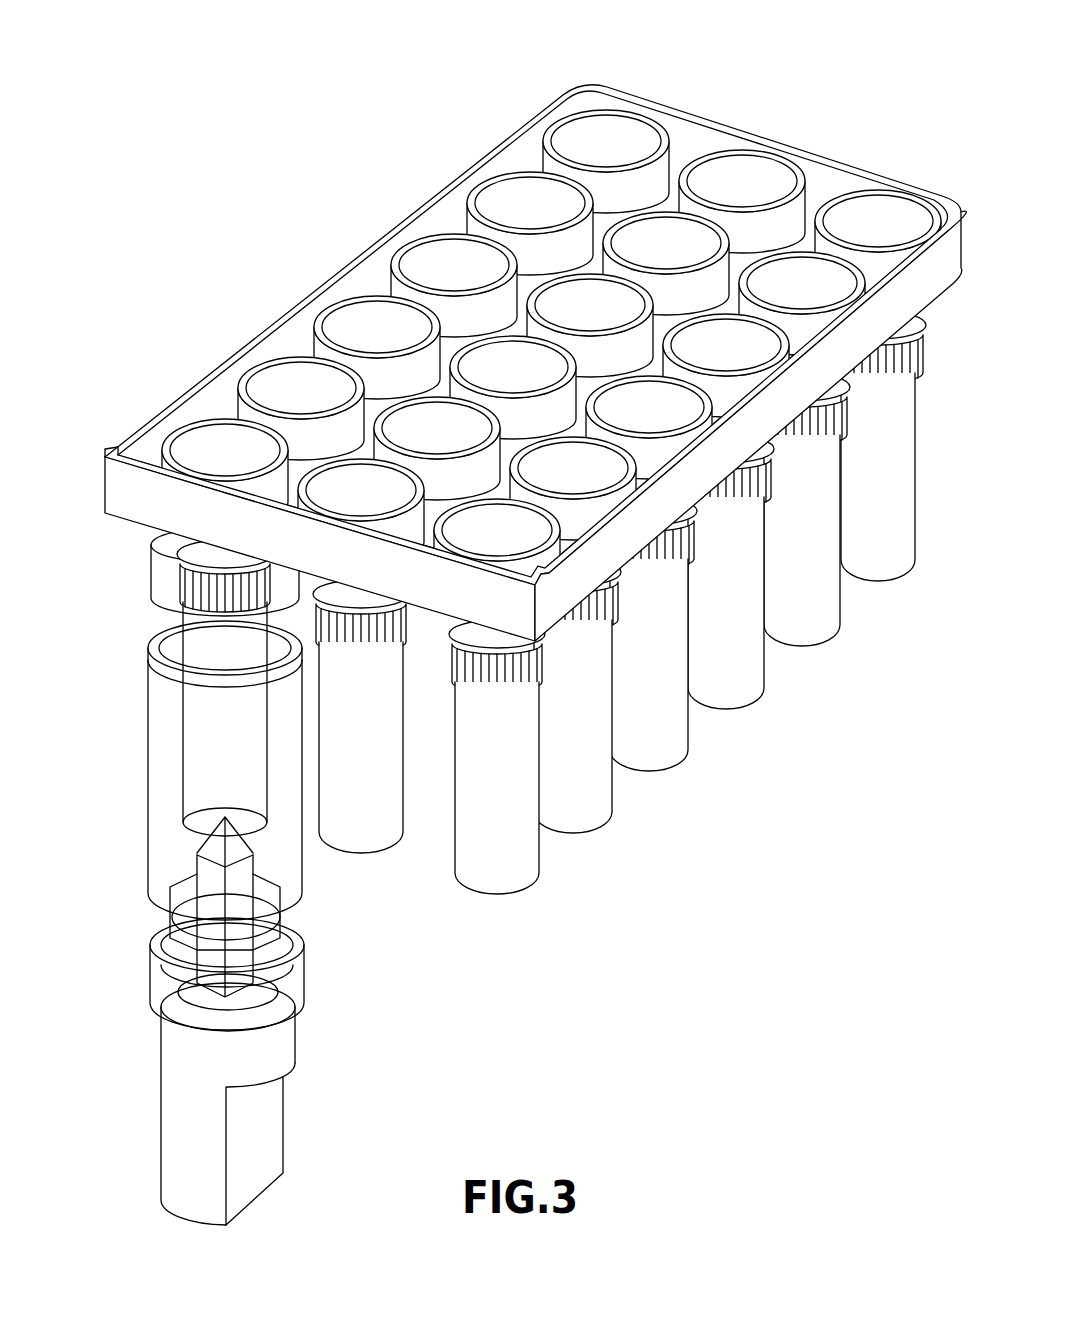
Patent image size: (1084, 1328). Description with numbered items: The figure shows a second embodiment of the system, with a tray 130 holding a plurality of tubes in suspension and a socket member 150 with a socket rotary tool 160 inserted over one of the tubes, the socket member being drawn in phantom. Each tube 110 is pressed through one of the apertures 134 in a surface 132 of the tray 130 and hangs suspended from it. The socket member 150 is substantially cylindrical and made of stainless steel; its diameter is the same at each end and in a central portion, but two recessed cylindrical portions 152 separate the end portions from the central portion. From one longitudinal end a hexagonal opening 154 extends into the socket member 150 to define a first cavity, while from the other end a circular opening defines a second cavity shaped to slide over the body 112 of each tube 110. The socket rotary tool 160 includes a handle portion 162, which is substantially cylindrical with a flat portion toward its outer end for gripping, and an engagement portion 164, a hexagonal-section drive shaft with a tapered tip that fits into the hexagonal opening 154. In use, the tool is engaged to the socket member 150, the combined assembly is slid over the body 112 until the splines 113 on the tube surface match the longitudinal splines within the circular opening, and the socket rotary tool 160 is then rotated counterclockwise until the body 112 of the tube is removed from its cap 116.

The tube 110 is at (619, 602).
The body 112 is at (670, 728).
The splines 113 is at (665, 553).
The cap 116 is at (648, 425).
The tray 130 is at (535, 358).
The surface 132 is at (735, 263).
The apertures 134 is at (622, 198).
The socket member 150 is at (206, 778).
The recessed cylindrical portions 152 is at (163, 633).
The hexagonal opening 154 is at (262, 822).
The socket rotary tool 160 is at (214, 1099).
The handle portion 162 is at (270, 1135).
The engagement portion 164 is at (240, 900).